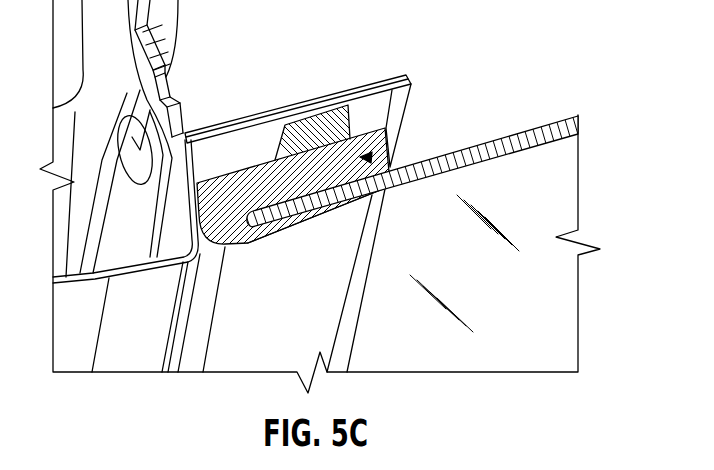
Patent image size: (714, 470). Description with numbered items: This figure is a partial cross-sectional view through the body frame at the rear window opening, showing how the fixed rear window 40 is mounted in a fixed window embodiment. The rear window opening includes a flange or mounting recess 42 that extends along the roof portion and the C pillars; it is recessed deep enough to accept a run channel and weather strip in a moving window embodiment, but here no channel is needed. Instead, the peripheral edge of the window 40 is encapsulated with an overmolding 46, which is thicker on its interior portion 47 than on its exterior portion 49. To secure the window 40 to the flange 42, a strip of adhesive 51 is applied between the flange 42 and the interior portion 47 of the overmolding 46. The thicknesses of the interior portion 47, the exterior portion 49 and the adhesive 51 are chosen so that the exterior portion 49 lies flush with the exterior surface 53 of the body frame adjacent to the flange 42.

The fixed rear window 40 is at (514, 186).
The flange or mounting recess 42 is at (386, 110).
The overmolding 46 is at (403, 115).
The interior portion 47 is at (252, 188).
The exterior portion 49 is at (291, 228).
The adhesive 51 is at (315, 137).
The exterior surface 53 is at (147, 312).